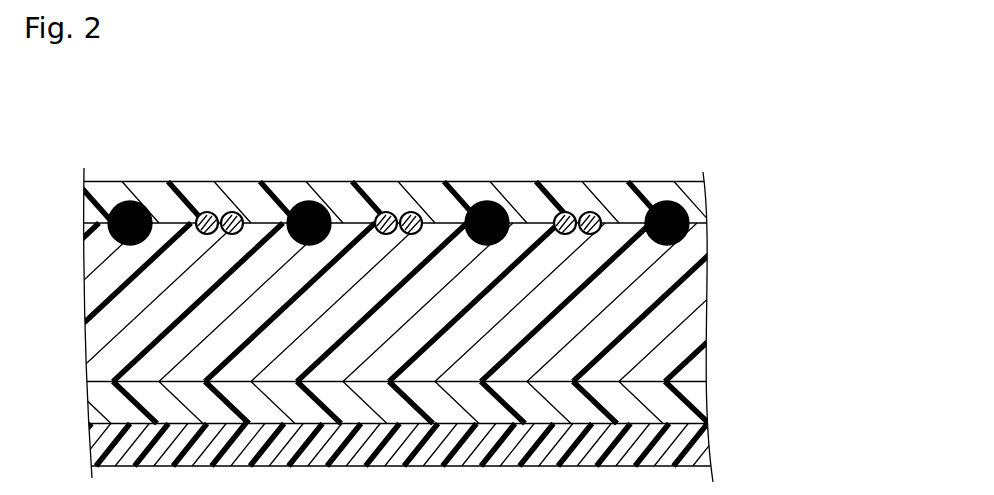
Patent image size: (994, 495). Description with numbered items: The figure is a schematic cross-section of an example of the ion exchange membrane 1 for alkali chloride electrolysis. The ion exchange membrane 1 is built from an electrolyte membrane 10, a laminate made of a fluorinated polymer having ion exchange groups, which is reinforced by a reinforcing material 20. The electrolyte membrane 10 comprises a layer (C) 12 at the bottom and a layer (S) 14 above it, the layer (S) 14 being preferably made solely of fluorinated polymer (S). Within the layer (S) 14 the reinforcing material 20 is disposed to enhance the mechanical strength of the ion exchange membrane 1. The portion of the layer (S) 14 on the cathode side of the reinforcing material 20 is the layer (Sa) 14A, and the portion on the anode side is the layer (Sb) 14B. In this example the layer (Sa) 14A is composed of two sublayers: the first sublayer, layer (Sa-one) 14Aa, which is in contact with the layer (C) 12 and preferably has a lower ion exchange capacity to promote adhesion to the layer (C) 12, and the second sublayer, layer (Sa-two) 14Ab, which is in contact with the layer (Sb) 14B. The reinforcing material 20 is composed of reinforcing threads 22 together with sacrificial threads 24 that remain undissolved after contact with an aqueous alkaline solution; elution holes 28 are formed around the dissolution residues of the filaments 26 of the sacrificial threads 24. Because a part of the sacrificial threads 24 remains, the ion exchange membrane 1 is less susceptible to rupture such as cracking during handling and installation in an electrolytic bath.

The ion exchange membrane for alkali chloride electrolysis 1 is at (651, 142).
The electrolyte membrane 10 is at (882, 290).
The layer (C) 12 is at (678, 448).
The layer (S) 14 is at (840, 205).
The layer (Sa) 14A is at (783, 350).
The layer (Sa-1) 14Aa is at (673, 407).
The layer (Sa-2) 14Ab is at (676, 372).
The layer (Sb) 14B is at (683, 195).
The reinforcing material 20 is at (95, 205).
The reinforcing threads 22 is at (302, 204).
The sacrificial threads 24 is at (422, 135).
The filaments 26 is at (385, 212).
The elution holes 28 is at (453, 190).